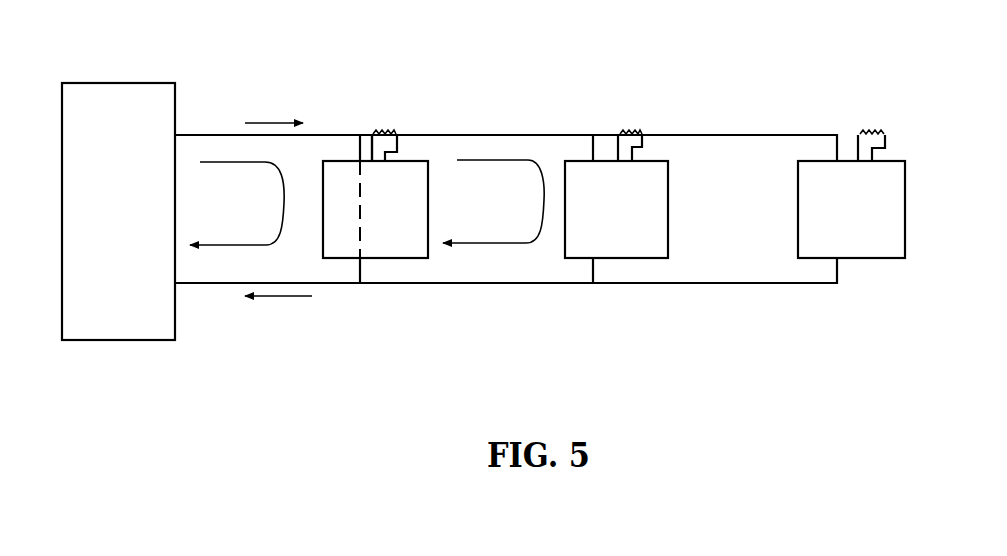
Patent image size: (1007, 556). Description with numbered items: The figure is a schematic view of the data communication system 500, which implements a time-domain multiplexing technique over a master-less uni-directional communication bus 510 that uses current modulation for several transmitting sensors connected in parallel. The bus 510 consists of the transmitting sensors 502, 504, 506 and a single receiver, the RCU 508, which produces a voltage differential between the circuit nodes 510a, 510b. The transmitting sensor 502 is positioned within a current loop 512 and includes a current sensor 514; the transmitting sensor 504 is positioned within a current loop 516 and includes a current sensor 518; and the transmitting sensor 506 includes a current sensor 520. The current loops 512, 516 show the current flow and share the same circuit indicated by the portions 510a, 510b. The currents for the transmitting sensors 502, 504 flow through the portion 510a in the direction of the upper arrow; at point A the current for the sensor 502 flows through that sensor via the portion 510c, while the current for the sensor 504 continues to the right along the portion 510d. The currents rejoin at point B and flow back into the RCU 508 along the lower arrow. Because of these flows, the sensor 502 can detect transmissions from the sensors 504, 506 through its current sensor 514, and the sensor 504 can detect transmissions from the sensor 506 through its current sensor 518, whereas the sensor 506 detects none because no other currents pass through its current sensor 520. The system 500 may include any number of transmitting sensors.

The data communication system 500 is at (415, 343).
The transmitting sensor 502 is at (407, 259).
The transmitting sensor 504 is at (623, 258).
The transmitting sensor 506 is at (868, 258).
The receiver (RCU) 508 is at (62, 98).
The uni-directional communication bus 510 is at (262, 102).
The portion of circuit (circuit node) 510a is at (215, 135).
The portion of circuit (circuit node) 510b is at (238, 287).
The portion of circuit 510c is at (360, 150).
The portion of circuit 510d is at (538, 133).
The current loop 512 is at (267, 170).
The current sensor 514 is at (373, 133).
The current loop 516 is at (522, 165).
The current sensor 518 is at (632, 131).
The current sensor 520 is at (875, 131).